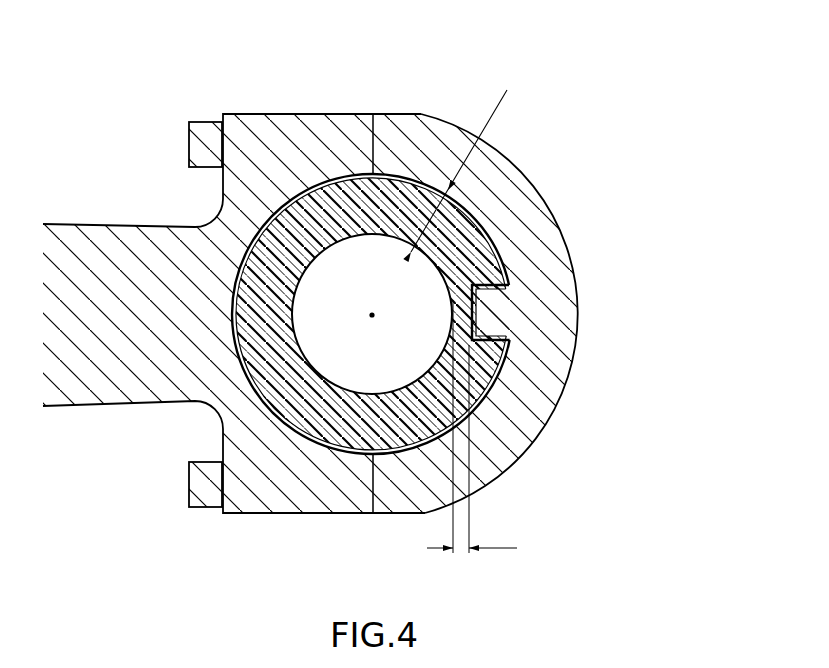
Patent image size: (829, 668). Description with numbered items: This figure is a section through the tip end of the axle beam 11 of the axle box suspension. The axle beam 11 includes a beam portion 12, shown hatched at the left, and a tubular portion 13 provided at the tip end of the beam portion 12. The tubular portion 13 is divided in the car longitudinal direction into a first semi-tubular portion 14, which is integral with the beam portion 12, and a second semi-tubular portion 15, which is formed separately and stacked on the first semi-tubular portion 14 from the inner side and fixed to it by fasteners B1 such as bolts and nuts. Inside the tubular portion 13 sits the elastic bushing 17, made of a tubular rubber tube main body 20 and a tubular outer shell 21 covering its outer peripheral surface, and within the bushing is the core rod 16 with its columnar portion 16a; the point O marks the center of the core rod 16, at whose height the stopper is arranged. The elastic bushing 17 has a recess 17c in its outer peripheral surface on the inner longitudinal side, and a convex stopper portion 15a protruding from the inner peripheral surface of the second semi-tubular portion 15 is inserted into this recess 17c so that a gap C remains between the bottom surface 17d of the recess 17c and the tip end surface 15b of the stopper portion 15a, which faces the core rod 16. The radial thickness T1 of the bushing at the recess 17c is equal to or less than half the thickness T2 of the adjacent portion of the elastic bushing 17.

The axle beam 11 is at (414, 334).
The beam portion 12 is at (62, 222).
The tubular portion 13 is at (448, 256).
The first semi-tubular portion 14 is at (322, 113).
The second semi-tubular portion 15 is at (523, 279).
The stopper portion 15a is at (495, 323).
The tip end surface 15b is at (477, 313).
The core rod 16 is at (355, 413).
The columnar portion 16a is at (323, 345).
The elastic bushing 17 is at (413, 296).
The recess 17c is at (503, 263).
The bottom surface 17d is at (503, 223).
The rubber tube main body 20 is at (293, 228).
The outer shell 21 is at (415, 250).
The fasteners B1 is at (188, 479).
The gap C is at (455, 352).
The center of bearing hole O is at (374, 320).
The thickness at the recess T1 is at (472, 426).
The thickness adjacent to the recess T2 is at (455, 174).